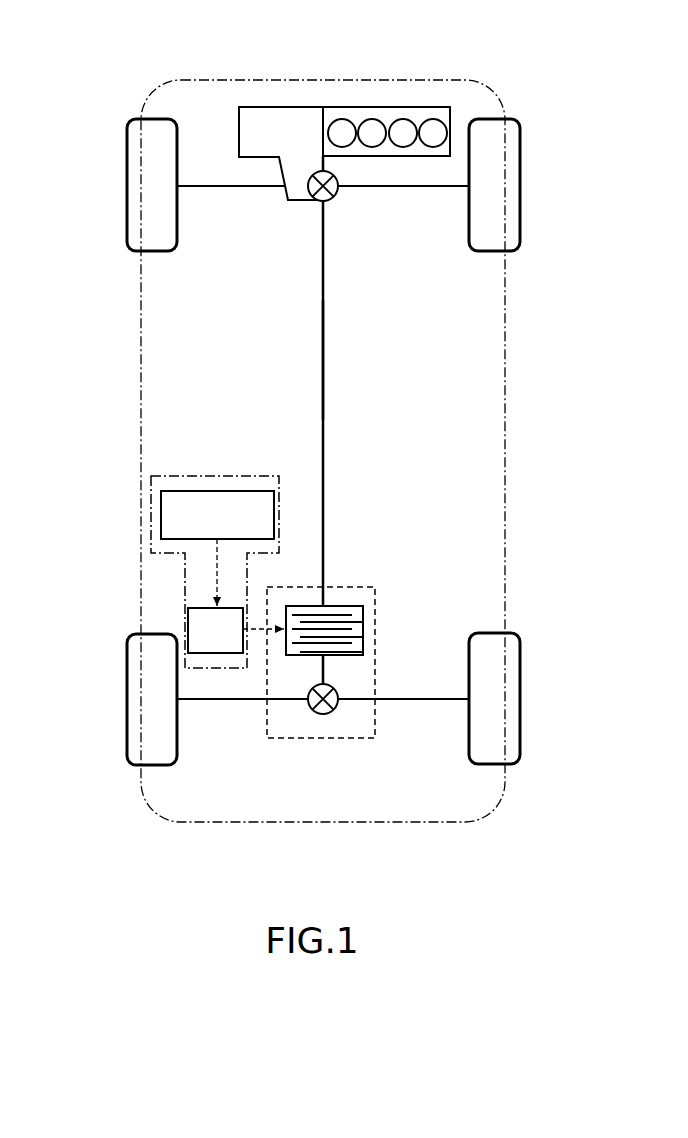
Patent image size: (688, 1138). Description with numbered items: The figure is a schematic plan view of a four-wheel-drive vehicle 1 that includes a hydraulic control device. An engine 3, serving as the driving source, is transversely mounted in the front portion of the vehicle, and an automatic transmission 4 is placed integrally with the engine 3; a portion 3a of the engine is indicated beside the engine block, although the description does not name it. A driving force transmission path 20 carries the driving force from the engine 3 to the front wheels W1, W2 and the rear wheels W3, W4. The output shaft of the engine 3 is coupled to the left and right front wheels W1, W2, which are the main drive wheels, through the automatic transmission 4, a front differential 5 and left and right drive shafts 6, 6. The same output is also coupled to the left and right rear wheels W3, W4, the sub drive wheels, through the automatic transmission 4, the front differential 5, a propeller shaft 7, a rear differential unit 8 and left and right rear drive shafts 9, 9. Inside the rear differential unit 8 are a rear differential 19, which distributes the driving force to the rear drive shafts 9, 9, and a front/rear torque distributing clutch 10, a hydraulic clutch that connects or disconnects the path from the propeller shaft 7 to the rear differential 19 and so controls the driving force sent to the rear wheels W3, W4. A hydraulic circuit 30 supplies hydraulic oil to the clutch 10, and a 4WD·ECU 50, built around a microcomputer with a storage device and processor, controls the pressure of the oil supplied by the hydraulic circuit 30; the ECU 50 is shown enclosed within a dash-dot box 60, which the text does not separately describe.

The four-wheel-drive vehicle 1 is at (505, 69).
The engine 3 is at (388, 106).
The engine output shaft 3a is at (327, 160).
The automatic transmission 4 is at (268, 106).
The front differential 5 is at (335, 203).
The drive shaft 6 is at (258, 187).
The propeller shaft 7 is at (326, 455).
The rear differential unit 8 is at (360, 586).
The rear drive shaft 9 is at (252, 702).
The front/rear torque distributing clutch 10 is at (366, 627).
The rear differential 19 is at (329, 713).
The driving force transmission path 20 is at (318, 357).
The hydraulic circuit 30 is at (187, 622).
The 4WD·ECU 50 is at (254, 490).
The control unit 60 is at (188, 475).
The front wheel W1 is at (127, 158).
The front wheel W2 is at (521, 158).
The rear wheel W3 is at (126, 690).
The rear wheel W4 is at (521, 690).